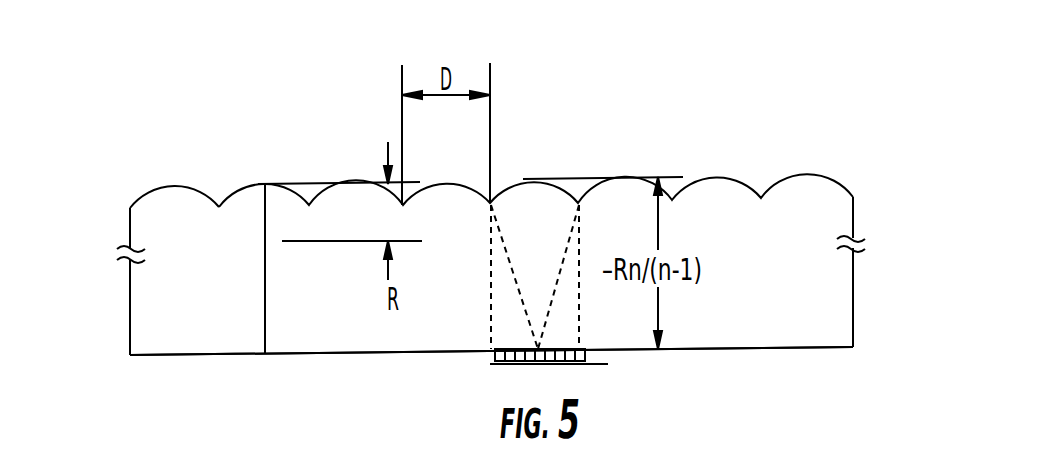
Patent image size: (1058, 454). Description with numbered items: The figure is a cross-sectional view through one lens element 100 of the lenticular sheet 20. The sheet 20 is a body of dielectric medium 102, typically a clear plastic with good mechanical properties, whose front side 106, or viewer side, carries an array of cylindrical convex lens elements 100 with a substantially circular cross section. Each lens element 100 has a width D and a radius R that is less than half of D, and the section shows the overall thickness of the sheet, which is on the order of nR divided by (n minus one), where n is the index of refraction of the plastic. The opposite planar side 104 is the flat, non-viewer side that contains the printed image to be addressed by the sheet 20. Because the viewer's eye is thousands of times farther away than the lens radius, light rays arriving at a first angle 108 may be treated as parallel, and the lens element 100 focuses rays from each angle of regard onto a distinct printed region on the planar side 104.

The lenticular sheet 20 is at (108, 198).
The lens element 100 is at (202, 190).
The dielectric medium 102 is at (790, 237).
The planar side 104 is at (153, 357).
The front side 106 is at (173, 165).
The first angle 108 is at (283, 184).